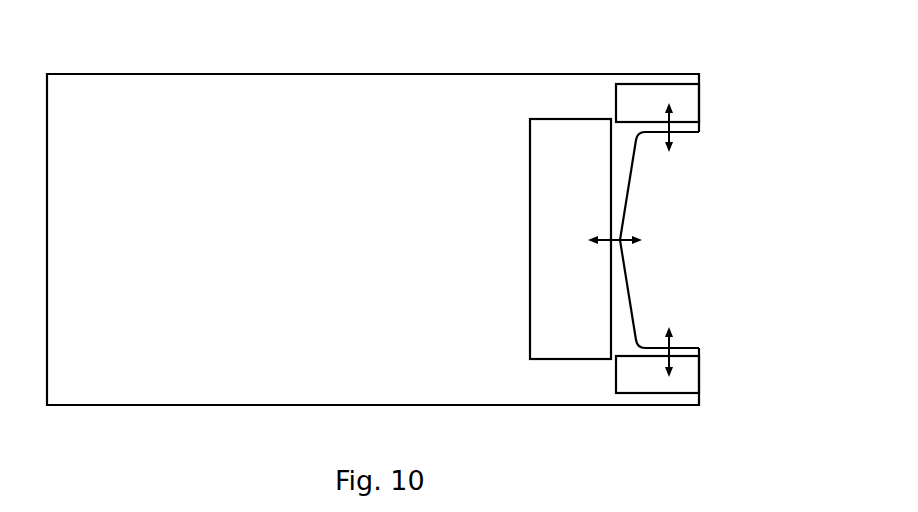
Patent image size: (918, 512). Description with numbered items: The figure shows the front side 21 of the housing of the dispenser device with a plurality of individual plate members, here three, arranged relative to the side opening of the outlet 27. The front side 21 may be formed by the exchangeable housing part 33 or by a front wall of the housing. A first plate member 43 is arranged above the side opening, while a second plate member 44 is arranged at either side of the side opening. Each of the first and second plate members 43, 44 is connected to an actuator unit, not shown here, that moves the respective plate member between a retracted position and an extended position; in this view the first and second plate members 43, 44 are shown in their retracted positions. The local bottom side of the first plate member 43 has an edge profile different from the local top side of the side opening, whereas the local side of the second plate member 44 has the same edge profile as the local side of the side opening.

The front side 21 is at (351, 245).
The outlet 27 is at (697, 237).
The exchangeable housing part 33 is at (126, 381).
The first plate member 43 is at (548, 237).
The second plate member 44 is at (645, 97).